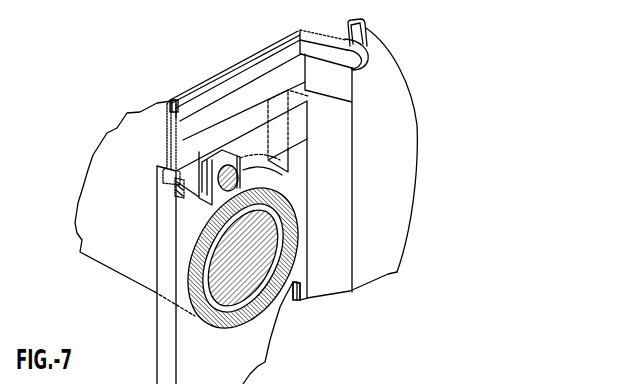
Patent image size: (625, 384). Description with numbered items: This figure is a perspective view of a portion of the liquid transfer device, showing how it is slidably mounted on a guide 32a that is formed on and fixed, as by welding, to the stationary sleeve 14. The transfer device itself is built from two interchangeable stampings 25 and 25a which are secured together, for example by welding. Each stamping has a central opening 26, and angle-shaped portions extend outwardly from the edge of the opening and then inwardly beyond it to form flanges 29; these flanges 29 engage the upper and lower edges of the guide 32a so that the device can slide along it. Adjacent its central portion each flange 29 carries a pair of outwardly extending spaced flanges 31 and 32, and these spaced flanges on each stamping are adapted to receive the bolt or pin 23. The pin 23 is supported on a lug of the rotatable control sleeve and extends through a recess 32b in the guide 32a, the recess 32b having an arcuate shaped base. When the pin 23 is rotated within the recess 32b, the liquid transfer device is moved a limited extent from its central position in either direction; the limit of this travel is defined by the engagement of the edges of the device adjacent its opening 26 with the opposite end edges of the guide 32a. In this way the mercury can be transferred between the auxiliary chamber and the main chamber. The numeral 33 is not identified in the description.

The stationary sleeve 14 is at (110, 255).
The bolt or pin 23 is at (224, 165).
The stamping 25 is at (171, 106).
The stamping 25a is at (231, 78).
The central opening 26 is at (298, 301).
The flange 29 is at (178, 186).
The spaced flange 31 is at (212, 210).
The spaced flange 32 is at (242, 176).
The guide 32a is at (165, 318).
The recess 32b is at (281, 160).
The clip 33 is at (166, 133).